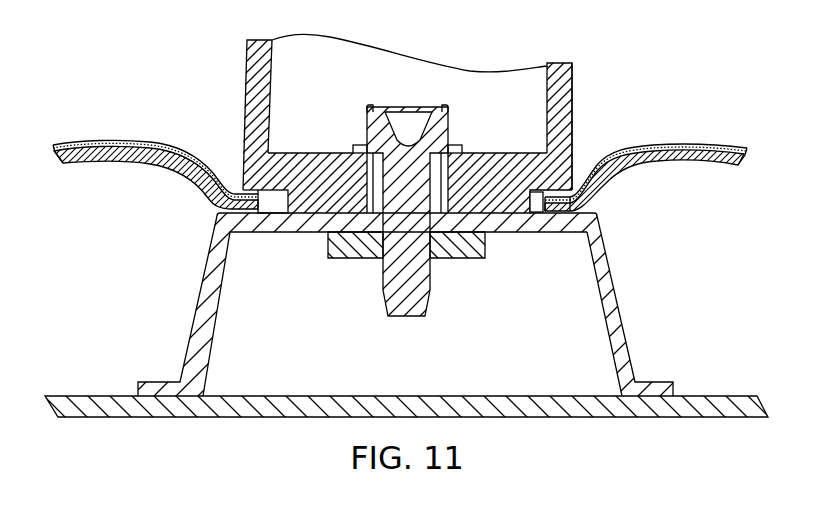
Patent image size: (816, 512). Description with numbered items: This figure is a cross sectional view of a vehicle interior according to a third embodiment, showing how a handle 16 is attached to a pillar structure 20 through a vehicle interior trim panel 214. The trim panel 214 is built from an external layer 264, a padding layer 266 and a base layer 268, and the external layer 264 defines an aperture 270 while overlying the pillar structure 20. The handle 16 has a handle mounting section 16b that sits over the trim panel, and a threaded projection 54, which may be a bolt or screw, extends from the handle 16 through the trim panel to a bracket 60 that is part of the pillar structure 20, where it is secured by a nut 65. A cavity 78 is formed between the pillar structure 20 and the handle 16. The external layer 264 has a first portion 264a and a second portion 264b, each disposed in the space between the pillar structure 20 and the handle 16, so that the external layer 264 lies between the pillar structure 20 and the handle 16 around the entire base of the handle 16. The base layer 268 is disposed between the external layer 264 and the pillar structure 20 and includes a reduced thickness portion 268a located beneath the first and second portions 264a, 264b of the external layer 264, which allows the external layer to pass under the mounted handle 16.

The handle 16 is at (573, 101).
The handle mounting section 16b is at (573, 163).
The pillar structure 20 is at (230, 419).
The threaded projection 54 is at (384, 302).
The bracket 60 is at (624, 313).
The nut 65 is at (467, 259).
The cavity 78 is at (535, 213).
The vehicle interior trim panel 214 is at (95, 141).
The external layer 264 is at (148, 141).
The first portion of the external layer 264a is at (527, 193).
The second portion of the external layer 264b is at (255, 157).
The padding layer 266 is at (62, 155).
The base layer 268 is at (80, 163).
The reduced thickness portion 268a is at (542, 211).
The aperture 270 is at (287, 215).